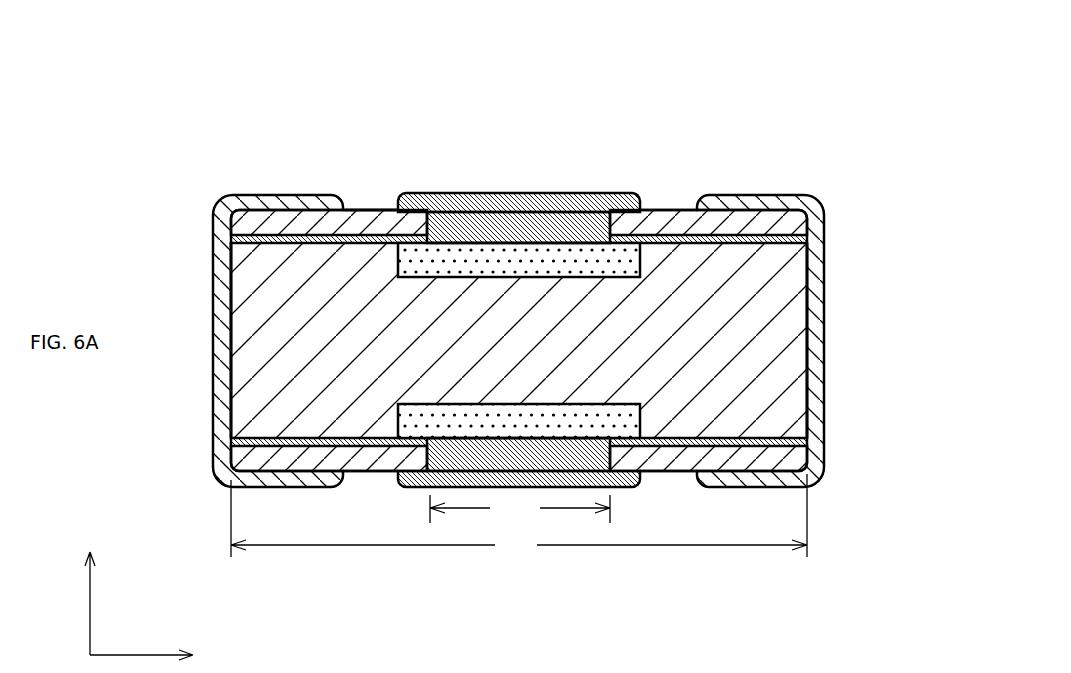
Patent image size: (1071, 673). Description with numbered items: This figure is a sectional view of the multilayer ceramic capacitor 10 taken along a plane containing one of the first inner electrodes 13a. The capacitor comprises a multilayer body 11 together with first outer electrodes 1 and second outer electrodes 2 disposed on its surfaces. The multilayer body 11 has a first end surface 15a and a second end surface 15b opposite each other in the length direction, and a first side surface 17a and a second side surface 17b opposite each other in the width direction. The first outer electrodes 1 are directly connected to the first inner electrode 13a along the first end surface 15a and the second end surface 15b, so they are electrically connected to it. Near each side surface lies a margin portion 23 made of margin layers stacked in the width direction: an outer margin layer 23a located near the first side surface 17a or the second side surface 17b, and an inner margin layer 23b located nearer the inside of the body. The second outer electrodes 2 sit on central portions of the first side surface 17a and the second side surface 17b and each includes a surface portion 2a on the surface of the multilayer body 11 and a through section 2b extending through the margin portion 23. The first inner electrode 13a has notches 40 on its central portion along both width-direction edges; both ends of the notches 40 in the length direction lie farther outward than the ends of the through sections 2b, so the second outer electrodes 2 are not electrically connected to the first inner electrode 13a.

The multilayer ceramic capacitor 10 is at (345, 85).
The first outer electrode 1 is at (245, 193).
The multilayer body 11 is at (366, 186).
The second outer electrode 2 is at (444, 99).
The surface portion 2a is at (457, 193).
The through section 2b is at (418, 193).
The notch 40 is at (540, 262).
The second side surface 17b is at (655, 212).
The first side surface 17a is at (675, 471).
The margin portion 23 is at (652, 98).
The outer margin layer 23a is at (662, 238).
The inner margin layer 23b is at (700, 228).
The first end surface 15a is at (235, 322).
The second end surface 15b is at (806, 352).
The first inner electrode 13a is at (765, 308).